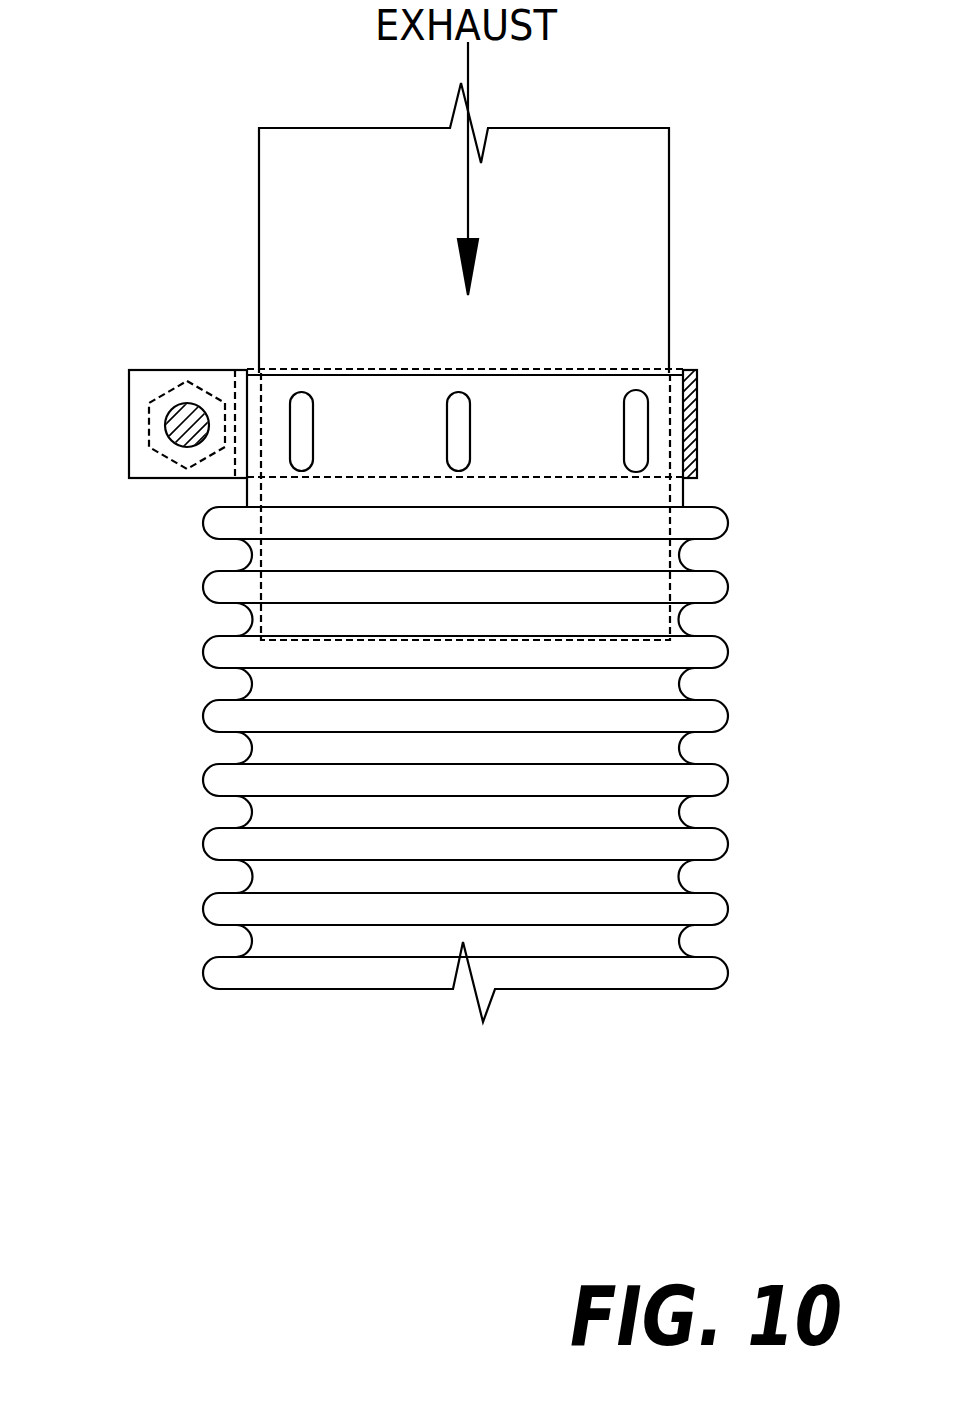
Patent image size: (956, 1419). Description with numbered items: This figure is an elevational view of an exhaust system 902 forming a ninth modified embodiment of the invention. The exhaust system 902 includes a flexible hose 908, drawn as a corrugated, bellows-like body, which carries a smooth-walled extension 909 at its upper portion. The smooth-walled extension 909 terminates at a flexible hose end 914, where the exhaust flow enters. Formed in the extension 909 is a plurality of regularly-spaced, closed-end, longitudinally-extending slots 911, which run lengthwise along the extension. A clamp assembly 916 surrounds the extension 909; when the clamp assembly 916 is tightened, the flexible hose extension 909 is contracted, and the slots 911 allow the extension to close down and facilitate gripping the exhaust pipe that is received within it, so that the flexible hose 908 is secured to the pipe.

The exhaust system 902 is at (170, 229).
The flexible hose 908 is at (720, 986).
The smooth-walled extension 909 is at (585, 453).
The slots 911 is at (462, 395).
The flexible hose end 914 is at (482, 376).
The clamp assembly 916 is at (712, 371).